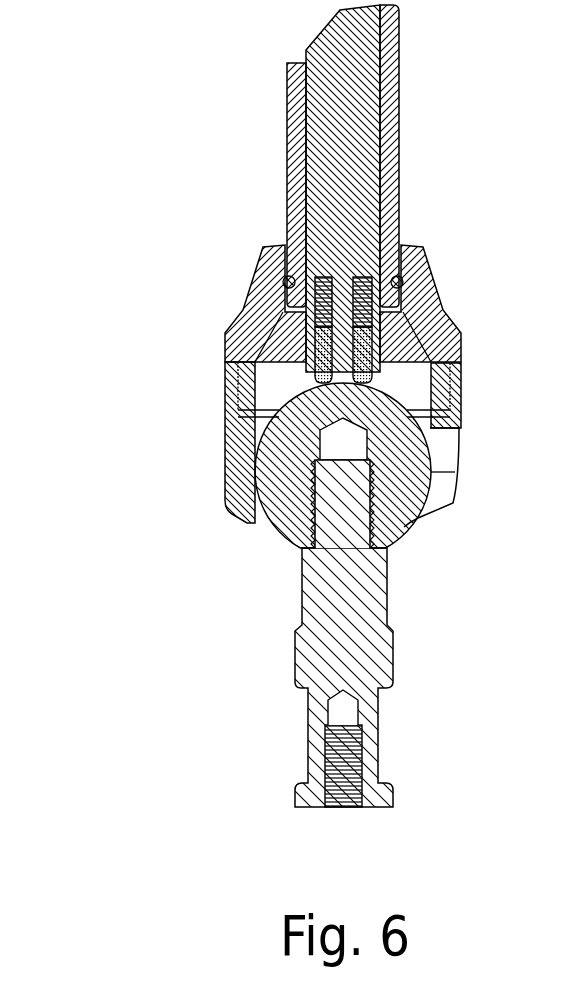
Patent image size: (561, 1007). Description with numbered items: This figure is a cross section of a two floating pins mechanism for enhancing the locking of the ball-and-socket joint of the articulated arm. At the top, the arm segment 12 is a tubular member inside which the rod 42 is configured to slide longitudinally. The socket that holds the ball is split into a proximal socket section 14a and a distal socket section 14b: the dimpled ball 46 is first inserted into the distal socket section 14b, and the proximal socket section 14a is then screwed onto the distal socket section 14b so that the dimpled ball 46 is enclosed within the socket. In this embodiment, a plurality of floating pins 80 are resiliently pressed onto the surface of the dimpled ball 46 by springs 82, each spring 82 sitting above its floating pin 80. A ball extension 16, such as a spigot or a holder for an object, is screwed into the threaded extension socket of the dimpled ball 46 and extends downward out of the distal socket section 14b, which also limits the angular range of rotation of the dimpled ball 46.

The arm segment 12 is at (290, 118).
The rod 42 is at (322, 200).
The spring 82 is at (318, 285).
The floating pins 80 is at (322, 340).
The proximal socket section 14a is at (250, 312).
The distal socket section 14b is at (237, 438).
The dimpled ball 46 is at (283, 500).
The ball extension 16 is at (312, 640).